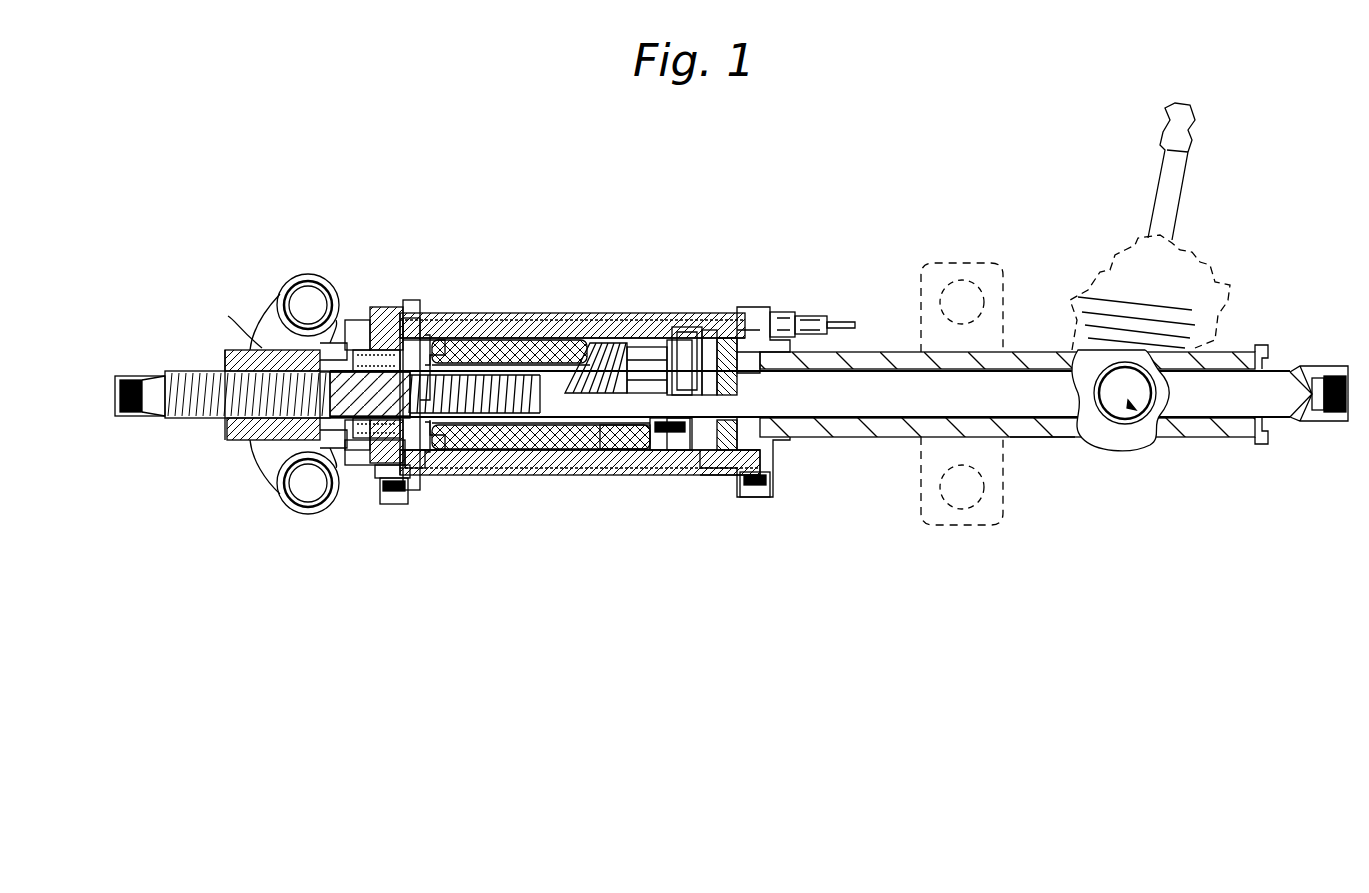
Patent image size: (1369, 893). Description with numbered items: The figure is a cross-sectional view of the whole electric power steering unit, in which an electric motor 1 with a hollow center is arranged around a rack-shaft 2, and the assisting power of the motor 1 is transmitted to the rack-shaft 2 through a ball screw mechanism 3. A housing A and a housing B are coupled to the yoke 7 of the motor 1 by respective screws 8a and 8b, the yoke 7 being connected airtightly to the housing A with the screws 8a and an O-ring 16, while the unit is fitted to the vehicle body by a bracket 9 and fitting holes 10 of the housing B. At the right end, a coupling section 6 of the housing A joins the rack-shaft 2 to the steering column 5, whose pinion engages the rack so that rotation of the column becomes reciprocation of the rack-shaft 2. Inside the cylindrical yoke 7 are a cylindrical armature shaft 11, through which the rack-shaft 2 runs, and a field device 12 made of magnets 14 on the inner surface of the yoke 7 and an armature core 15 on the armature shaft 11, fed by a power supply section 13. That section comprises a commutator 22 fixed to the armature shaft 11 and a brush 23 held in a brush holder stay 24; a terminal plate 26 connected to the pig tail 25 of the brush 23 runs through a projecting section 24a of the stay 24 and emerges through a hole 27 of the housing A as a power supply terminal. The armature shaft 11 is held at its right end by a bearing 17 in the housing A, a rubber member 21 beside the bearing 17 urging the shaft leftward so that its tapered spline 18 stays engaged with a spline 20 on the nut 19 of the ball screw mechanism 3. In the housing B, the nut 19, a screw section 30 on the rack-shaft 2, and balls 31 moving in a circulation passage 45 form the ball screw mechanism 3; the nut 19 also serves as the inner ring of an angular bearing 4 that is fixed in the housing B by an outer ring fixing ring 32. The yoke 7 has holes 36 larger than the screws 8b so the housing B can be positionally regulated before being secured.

The electric motor 1 is at (490, 312).
The rack-shaft 2 is at (903, 400).
The ball screw mechanism 3 is at (369, 470).
The angular bearing 4 is at (347, 318).
The steering column 5 is at (1165, 182).
The coupling section 6 is at (1143, 443).
The yoke 7 is at (613, 478).
The screws 8a is at (742, 482).
The screws 8b is at (410, 495).
The bracket 9 is at (958, 262).
The fitting holes 10 is at (300, 278).
The armature shaft 11 is at (583, 478).
The field device 12 is at (528, 345).
The power supply section 13 is at (690, 478).
The magnets 14 is at (543, 478).
The armature core 15 is at (576, 338).
The O-ring 16 is at (733, 483).
The bearing 17 is at (767, 478).
The tapered spline 18 is at (446, 316).
The nut 19 is at (354, 470).
The spline 20 is at (412, 322).
The rubber member 21 is at (780, 440).
The commutator 22 is at (657, 312).
The brush 23 is at (665, 478).
The brush holder stay 24 is at (708, 315).
The projecting section 24a is at (743, 310).
The pig tail 25 is at (668, 315).
The terminal plate 26 is at (680, 315).
The hole 27 is at (763, 312).
The screw section 30 is at (253, 450).
The balls 31 is at (383, 505).
The outer ring fixing ring 32 is at (412, 460).
The hole 36 is at (410, 487).
The circulation passage 45 is at (372, 312).
The housing A is at (1057, 433).
The housing B is at (228, 316).